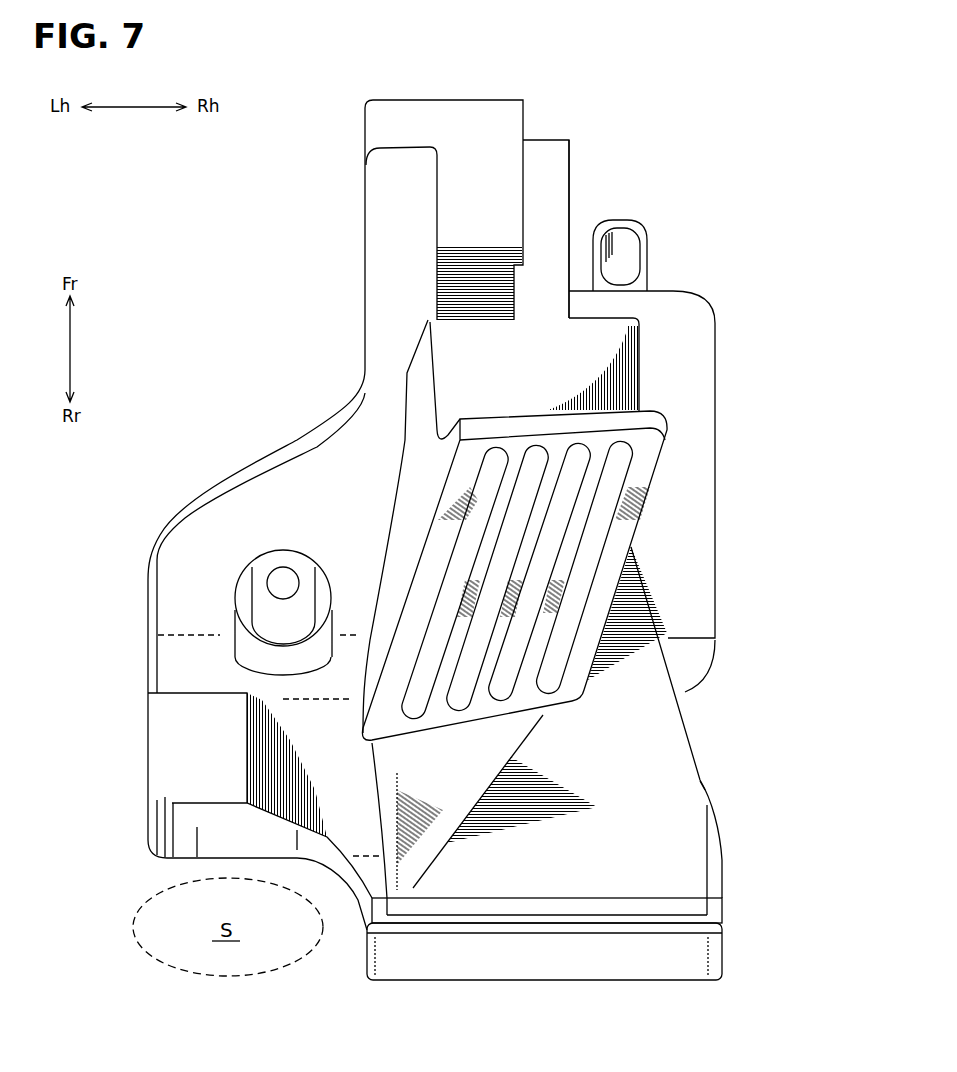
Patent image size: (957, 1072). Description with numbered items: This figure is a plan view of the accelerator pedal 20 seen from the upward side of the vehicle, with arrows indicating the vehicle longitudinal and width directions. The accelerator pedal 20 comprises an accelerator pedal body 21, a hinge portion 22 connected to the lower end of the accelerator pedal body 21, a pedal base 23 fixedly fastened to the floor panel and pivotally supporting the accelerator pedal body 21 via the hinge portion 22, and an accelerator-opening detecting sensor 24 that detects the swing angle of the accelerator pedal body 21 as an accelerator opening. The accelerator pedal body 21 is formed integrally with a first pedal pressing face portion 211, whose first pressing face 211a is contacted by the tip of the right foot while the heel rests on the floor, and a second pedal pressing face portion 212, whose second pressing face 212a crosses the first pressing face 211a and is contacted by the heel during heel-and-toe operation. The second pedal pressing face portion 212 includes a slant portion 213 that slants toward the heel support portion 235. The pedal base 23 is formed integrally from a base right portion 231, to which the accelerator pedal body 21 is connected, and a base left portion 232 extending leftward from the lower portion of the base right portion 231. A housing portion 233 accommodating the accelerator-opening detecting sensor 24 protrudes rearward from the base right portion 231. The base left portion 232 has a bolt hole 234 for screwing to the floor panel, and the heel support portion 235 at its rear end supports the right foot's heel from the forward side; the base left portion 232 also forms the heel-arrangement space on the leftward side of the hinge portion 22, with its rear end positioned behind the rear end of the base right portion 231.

The accelerator pedal 20 is at (206, 233).
The accelerator pedal body 21 is at (654, 343).
The first pedal pressing face portion 211 is at (660, 473).
The first pressing face 211a is at (622, 527).
The second pedal pressing face portion 212 is at (693, 723).
The second pressing face 212a is at (667, 783).
The slant portion 213 is at (422, 852).
The hinge portion 22 is at (730, 915).
The pedal base 23 is at (294, 427).
The base right portion 231 is at (590, 982).
The base left portion 232 is at (148, 665).
The housing portion 233 is at (453, 202).
The bolt hole 234 is at (285, 583).
The heel support portion 235 is at (197, 830).
The accelerator-opening detecting sensor 24 is at (583, 183).